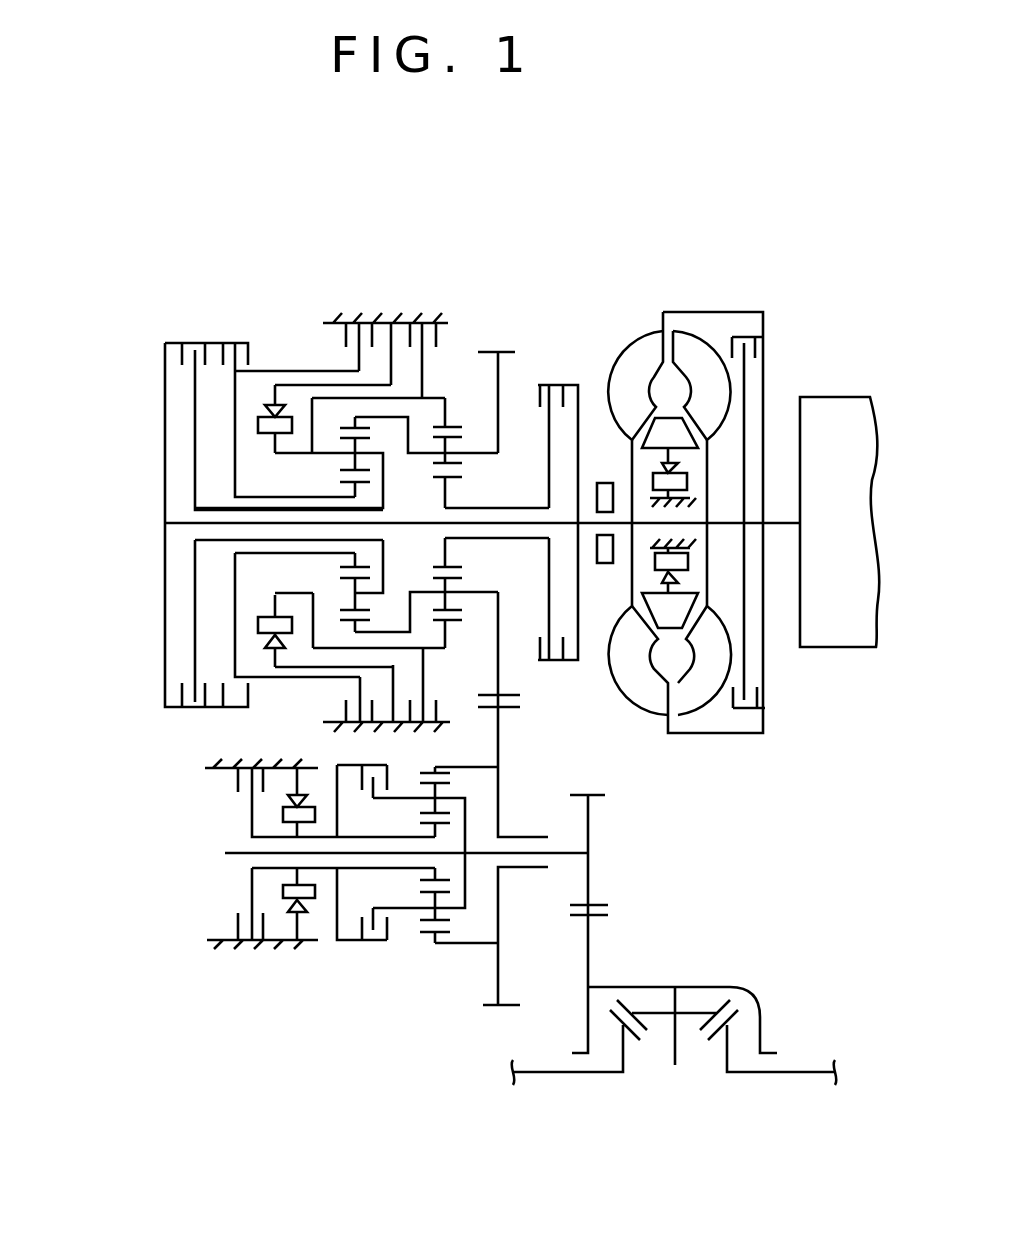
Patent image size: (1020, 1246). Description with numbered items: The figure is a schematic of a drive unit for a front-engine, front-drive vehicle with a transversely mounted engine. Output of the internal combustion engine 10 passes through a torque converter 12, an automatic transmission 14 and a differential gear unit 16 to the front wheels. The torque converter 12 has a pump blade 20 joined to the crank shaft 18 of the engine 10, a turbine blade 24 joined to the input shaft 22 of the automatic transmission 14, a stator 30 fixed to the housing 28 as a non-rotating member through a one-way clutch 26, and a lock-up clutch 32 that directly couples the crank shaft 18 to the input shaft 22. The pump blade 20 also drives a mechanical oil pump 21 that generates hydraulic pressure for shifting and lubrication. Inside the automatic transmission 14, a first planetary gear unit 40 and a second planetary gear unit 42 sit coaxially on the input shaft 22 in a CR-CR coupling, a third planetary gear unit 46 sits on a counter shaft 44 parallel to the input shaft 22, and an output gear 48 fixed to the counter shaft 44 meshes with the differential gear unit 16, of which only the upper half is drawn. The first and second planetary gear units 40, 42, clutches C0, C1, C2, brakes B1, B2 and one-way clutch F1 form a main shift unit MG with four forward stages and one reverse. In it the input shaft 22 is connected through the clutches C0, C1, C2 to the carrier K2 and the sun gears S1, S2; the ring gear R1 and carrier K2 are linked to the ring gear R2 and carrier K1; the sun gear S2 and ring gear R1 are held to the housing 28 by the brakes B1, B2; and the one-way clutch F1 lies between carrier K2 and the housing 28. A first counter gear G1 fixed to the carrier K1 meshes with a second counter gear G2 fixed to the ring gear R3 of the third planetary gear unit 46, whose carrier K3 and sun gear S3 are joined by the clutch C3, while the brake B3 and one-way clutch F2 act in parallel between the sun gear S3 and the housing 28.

The internal combustion engine 10 is at (823, 420).
The torque converter 12 is at (695, 484).
The automatic transmission 14 is at (495, 257).
The differential gear unit 16 is at (668, 948).
The crank shaft 18 is at (783, 523).
The pump blade 20 is at (648, 350).
The mechanical oil pump 21 is at (603, 483).
The input shaft 22 is at (522, 523).
The turbine blade 24 is at (695, 693).
The one-way clutch 26 is at (653, 607).
The housing 28 is at (397, 317).
The stator 30 is at (660, 440).
The lock-up clutch 32 is at (740, 335).
The first planetary gear unit 40 is at (453, 365).
The second planetary gear unit 42 is at (337, 413).
The counter shaft 44 is at (235, 852).
The third planetary gear unit 46 is at (420, 945).
The output gear 48 is at (595, 905).
The main shift unit MG is at (153, 655).
The clutch C0 is at (190, 347).
The clutch C1 is at (548, 385).
The clutch C2 is at (235, 342).
The clutch C3 is at (378, 943).
The brake B1 is at (343, 335).
The brake B2 is at (455, 337).
The brake B3 is at (235, 930).
The one-way clutch F1 is at (258, 425).
The one-way clutch F2 is at (312, 907).
The carrier K1 is at (473, 455).
The carrier K2 is at (340, 455).
The carrier K3 is at (448, 793).
The ring gear R1 is at (453, 427).
The ring gear R2 is at (363, 423).
The ring gear R3 is at (428, 767).
The sun gear S1 is at (455, 483).
The sun gear S2 is at (355, 485).
The sun gear S3 is at (420, 828).
The first counter gear G1 is at (508, 687).
The counter driven gear G2 is at (507, 1000).